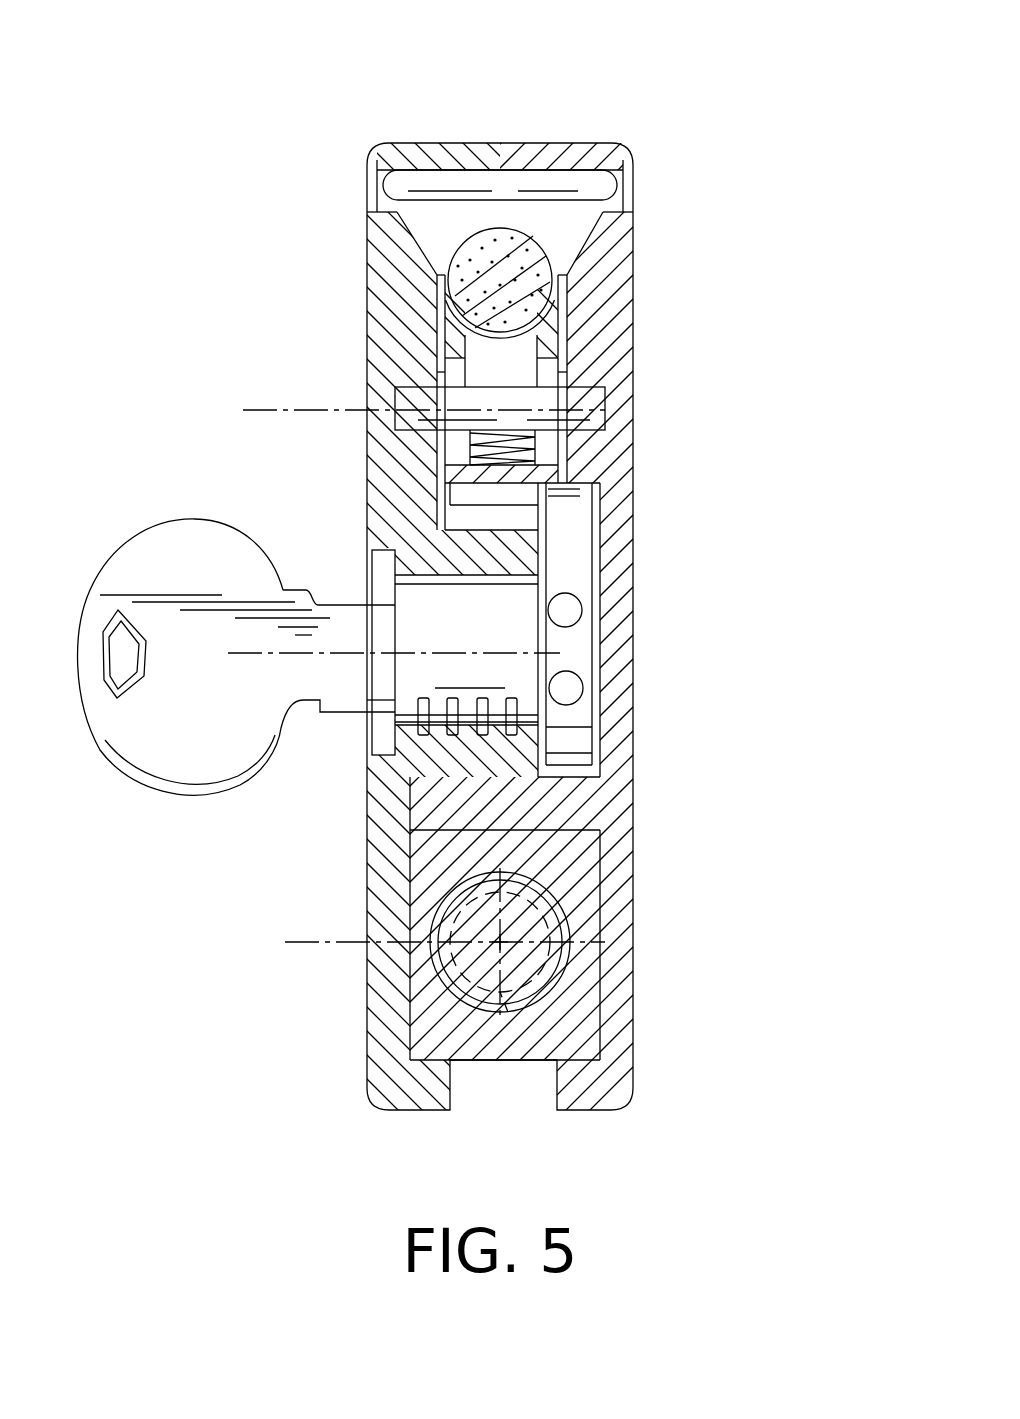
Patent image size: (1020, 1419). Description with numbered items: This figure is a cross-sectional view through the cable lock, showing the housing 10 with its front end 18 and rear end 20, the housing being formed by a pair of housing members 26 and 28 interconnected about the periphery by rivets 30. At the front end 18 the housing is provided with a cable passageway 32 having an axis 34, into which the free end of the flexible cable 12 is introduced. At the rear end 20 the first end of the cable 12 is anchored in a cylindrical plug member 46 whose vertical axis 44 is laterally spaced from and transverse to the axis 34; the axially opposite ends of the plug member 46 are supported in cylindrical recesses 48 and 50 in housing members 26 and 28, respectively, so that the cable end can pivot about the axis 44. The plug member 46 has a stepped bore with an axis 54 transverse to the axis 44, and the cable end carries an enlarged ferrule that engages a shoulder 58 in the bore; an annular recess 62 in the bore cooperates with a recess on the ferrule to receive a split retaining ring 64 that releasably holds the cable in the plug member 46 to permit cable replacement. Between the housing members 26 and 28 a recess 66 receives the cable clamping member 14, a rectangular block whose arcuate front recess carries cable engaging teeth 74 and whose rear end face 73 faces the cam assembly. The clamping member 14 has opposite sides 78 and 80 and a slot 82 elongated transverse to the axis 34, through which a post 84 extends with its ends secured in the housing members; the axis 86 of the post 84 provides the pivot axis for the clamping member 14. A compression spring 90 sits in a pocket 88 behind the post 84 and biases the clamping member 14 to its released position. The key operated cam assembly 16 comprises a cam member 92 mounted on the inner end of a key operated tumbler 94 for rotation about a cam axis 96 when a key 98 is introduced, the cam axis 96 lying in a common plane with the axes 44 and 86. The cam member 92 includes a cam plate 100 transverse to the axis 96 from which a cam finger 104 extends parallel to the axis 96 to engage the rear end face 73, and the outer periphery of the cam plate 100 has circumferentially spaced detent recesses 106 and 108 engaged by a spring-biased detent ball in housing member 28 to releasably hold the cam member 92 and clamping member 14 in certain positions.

The housing 10 is at (780, 72).
The flexible cable 12 is at (556, 246).
The cable clamping member 14 is at (437, 333).
The key operated cam assembly 16 is at (360, 590).
The front end 18 is at (553, 143).
The rear end 20 is at (430, 1112).
The housing member 26 is at (367, 290).
The housing member 28 is at (635, 292).
The rivets 30 is at (524, 176).
The cable passageway 32 is at (470, 245).
The axis 34 is at (497, 270).
The vertical axis 44 is at (308, 947).
The cylindrical plug member 46 is at (583, 1026).
The cylindrical recess 48 is at (420, 855).
The cylindrical recess 50 is at (578, 850).
The axis 54 is at (485, 955).
The shoulder 58 is at (508, 1012).
The annular recess 62 is at (432, 923).
The split retaining ring 64 is at (567, 905).
The recess 66 is at (565, 338).
The rear end face 73 is at (471, 484).
The cable engaging teeth 74 is at (570, 277).
The side 78 is at (447, 468).
The side 80 is at (565, 326).
The slot 82 is at (455, 371).
The post 84 is at (392, 422).
The axis 86 is at (243, 410).
The pocket 88 is at (548, 457).
The compression spring 90 is at (508, 435).
The cam member 92 is at (600, 562).
The key operated tumbler 94 is at (367, 720).
The cam axis 96 is at (257, 653).
The key 98 is at (157, 735).
The cam plate 100 is at (578, 730).
The cam finger 104 is at (592, 494).
The recess 106 is at (570, 685).
The recess 108 is at (568, 610).